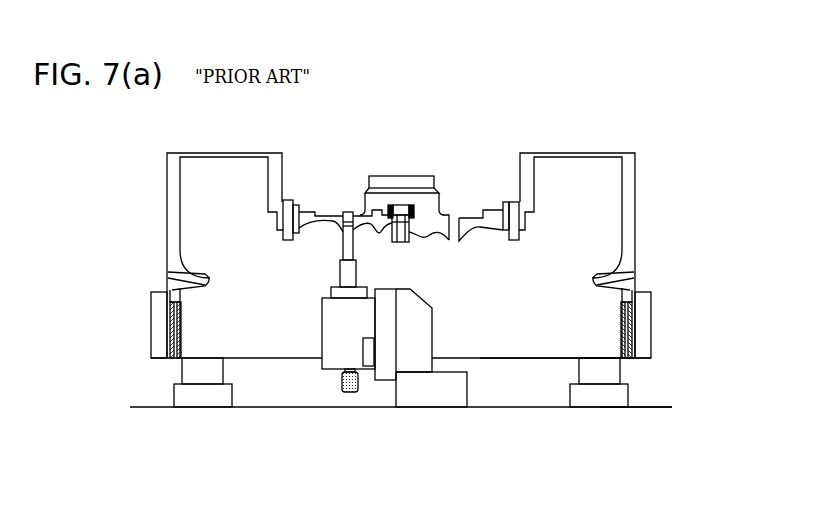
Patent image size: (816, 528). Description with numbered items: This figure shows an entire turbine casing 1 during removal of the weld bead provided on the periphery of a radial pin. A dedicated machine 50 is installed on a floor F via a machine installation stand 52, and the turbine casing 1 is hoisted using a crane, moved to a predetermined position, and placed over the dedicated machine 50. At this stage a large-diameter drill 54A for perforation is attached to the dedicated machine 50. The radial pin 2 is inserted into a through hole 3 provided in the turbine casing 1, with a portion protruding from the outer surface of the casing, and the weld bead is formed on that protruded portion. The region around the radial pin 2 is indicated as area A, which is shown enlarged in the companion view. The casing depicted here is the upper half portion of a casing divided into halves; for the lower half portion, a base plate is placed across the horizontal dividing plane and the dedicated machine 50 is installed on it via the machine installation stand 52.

The turbine casing 1 is at (635, 170).
The radial pin 2 is at (293, 192).
The through hole 3 is at (457, 218).
The area in the vicinity of the radial pin A is at (364, 215).
The large-diameter drill 54A is at (356, 250).
The dedicated machine 50 is at (322, 363).
The machine installation stand 52 is at (428, 342).
The floor F is at (655, 406).